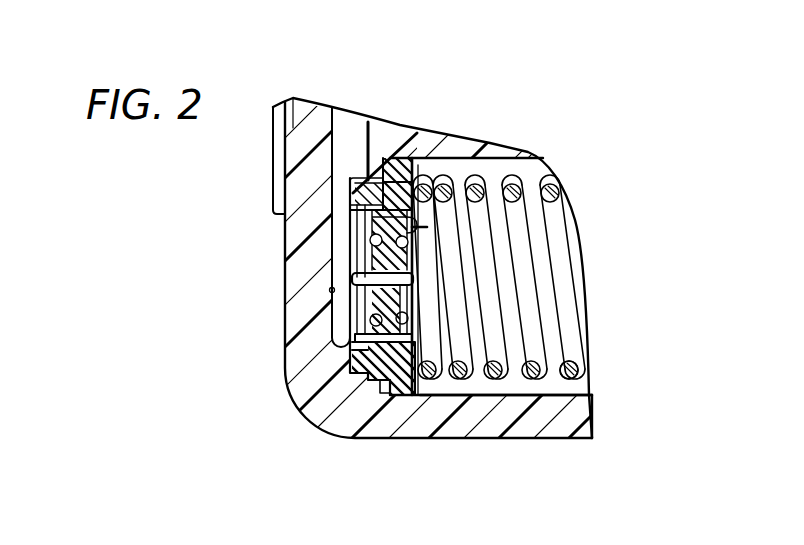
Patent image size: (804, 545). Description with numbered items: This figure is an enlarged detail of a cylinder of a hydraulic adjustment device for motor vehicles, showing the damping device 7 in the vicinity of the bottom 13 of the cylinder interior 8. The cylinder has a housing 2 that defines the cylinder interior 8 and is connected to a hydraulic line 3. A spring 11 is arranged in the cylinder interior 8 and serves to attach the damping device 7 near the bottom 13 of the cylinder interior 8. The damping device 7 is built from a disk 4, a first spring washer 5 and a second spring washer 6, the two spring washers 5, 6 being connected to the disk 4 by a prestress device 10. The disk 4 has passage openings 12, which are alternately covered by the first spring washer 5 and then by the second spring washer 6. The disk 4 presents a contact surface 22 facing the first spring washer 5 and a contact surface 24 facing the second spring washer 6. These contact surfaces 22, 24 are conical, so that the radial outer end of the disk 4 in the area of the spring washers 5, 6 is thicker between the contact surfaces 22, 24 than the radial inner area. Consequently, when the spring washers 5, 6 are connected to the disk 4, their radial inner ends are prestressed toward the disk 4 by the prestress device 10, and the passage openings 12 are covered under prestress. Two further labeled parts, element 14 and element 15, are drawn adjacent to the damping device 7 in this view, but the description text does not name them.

The housing 2 is at (545, 410).
The hydraulic line 3 is at (336, 123).
The disk 4 is at (418, 133).
The first spring washer 5 is at (350, 348).
The second spring washer 6 is at (430, 380).
The damping device 7 is at (412, 238).
The cylinder interior 8 is at (583, 388).
The prestress device 10 is at (430, 283).
The spring 11 is at (577, 365).
The passage openings 12 is at (378, 338).
The bottom 13 is at (330, 291).
The upper block 14 is at (368, 122).
The seal ring 15 is at (372, 177).
The contact surface 22 is at (370, 321).
The contact surface 24 is at (409, 316).